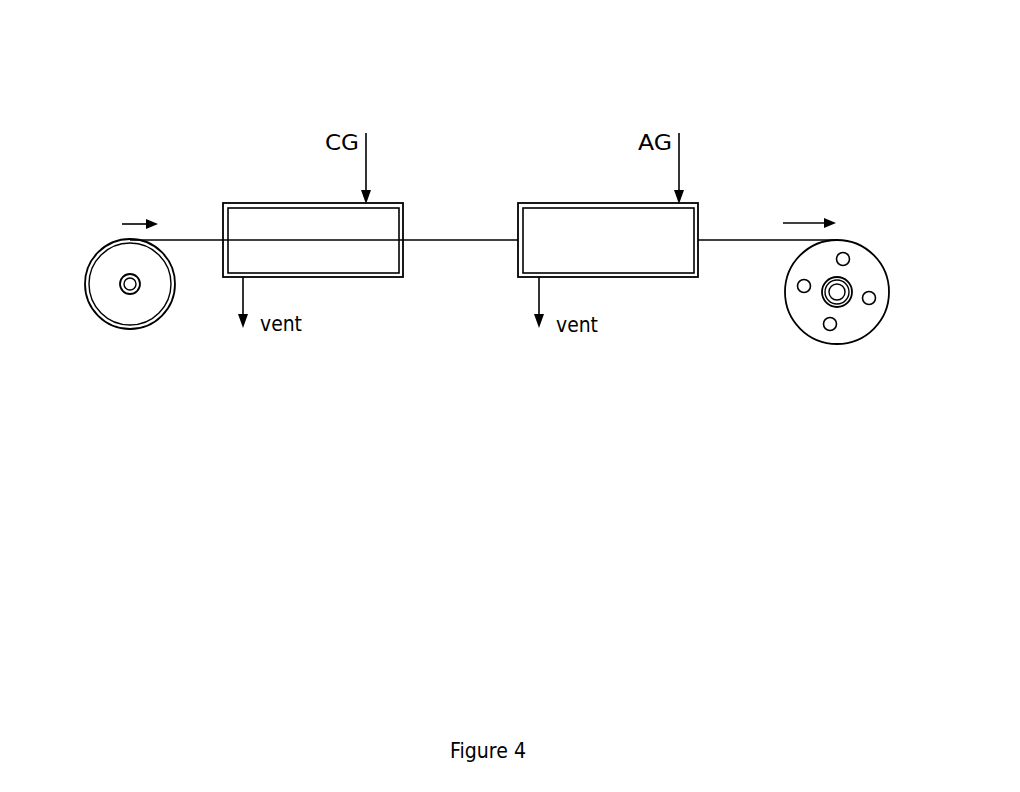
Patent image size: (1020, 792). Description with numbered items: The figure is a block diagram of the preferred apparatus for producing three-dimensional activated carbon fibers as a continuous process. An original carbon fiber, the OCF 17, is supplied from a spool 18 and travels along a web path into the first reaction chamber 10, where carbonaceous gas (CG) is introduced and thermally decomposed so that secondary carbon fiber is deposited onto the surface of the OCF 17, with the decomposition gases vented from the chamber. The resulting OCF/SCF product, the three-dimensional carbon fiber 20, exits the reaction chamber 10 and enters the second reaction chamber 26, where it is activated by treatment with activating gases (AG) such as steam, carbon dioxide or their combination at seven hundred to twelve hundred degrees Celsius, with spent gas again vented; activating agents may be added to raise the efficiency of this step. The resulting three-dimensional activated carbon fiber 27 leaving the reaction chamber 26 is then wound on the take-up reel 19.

The OCF 17 is at (188, 240).
The reaction chamber 10 is at (260, 205).
The 3D carbon fiber (OCF/SCF) 20 is at (471, 240).
The reaction chamber 26 is at (573, 205).
The 3D activated carbon fiber 27 is at (748, 240).
The spool 18 is at (140, 328).
The take-up reel 19 is at (815, 342).